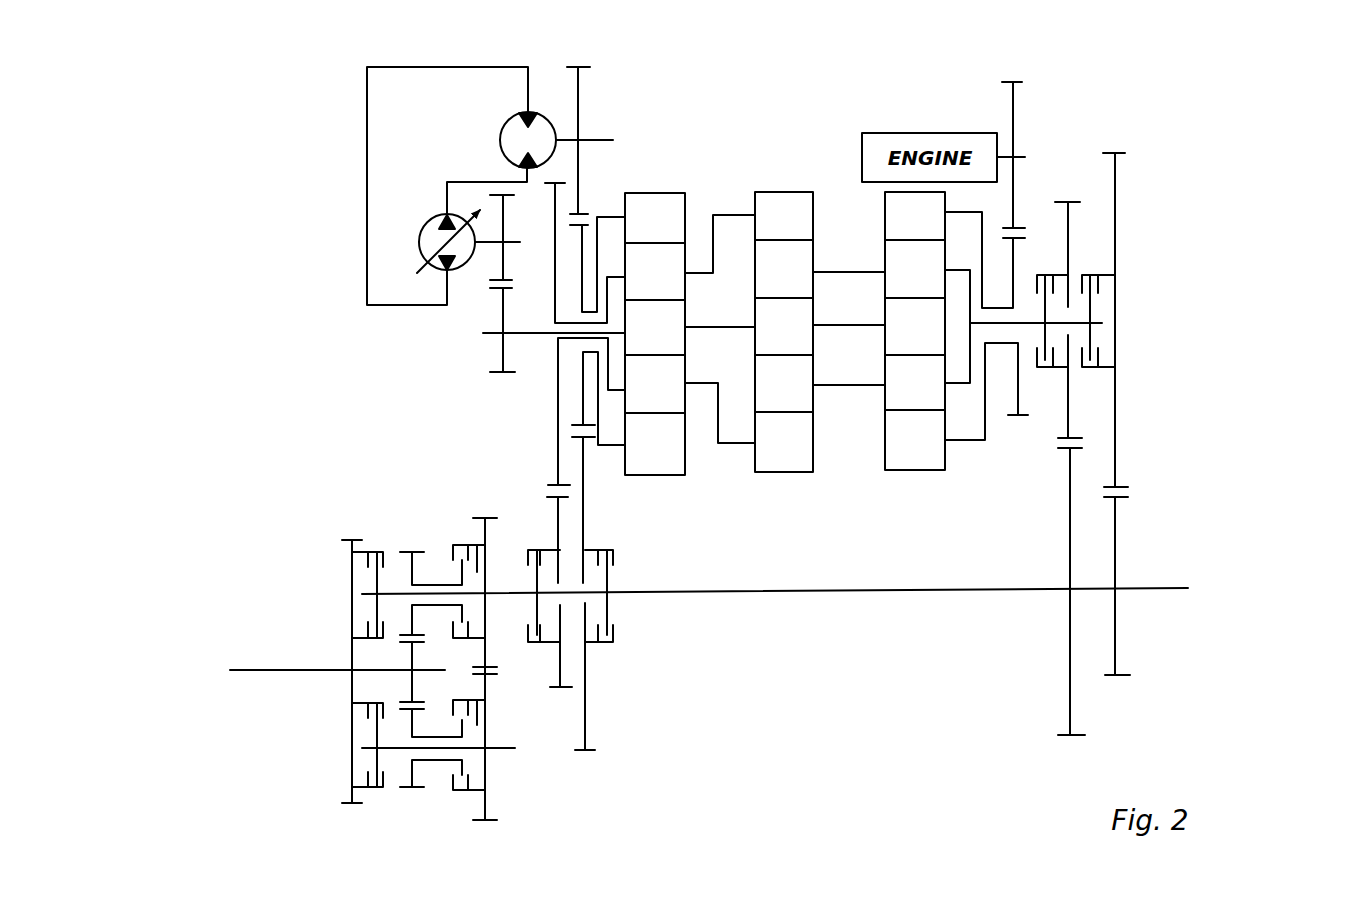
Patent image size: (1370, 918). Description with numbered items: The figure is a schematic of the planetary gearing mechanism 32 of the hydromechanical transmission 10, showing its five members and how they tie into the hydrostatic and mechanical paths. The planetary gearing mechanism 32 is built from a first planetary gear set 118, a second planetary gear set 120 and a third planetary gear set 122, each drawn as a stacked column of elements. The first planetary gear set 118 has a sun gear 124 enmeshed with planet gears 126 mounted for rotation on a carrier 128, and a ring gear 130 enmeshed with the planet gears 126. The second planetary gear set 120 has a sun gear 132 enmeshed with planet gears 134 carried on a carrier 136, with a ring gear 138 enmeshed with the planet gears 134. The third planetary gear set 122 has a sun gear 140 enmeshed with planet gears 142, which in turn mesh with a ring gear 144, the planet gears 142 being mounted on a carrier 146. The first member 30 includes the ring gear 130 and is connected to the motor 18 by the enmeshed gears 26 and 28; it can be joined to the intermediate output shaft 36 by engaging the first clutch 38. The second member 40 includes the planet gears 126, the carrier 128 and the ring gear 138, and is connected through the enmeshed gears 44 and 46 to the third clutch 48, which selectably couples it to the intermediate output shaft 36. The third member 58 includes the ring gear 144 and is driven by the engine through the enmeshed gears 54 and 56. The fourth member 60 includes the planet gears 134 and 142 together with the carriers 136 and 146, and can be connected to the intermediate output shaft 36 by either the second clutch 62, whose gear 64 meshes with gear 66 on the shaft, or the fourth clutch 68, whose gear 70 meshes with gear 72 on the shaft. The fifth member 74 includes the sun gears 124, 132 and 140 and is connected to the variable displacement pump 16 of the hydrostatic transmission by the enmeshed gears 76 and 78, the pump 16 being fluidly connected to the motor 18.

The transmission 10 is at (1288, 722).
The variable displacement pump 16 is at (432, 250).
The motor 18 is at (500, 127).
The gear 26 is at (588, 66).
The gear 28 is at (572, 233).
The first member 30 is at (603, 212).
The planetary gearing mechanism 32 is at (790, 497).
The intermediate output shaft 36 is at (794, 596).
The first clutch 38 is at (613, 643).
The second member 40 is at (617, 393).
The gear 44 is at (550, 482).
The gear 46 is at (545, 497).
The third clutch 48 is at (535, 646).
The gear 54 is at (1016, 80).
The input gear 56 is at (1019, 418).
The third member 58 is at (967, 443).
The fourth member 60 is at (955, 268).
The second clutch 62 is at (1047, 372).
The gear 64 is at (1060, 442).
The gear 66 is at (1064, 738).
The fourth clutch 68 is at (1096, 372).
The gear 70 is at (1126, 151).
The gear 72 is at (1130, 677).
The fifth member 74 is at (483, 340).
The gear 76 is at (498, 375).
The gear 78 is at (492, 289).
The first planetary gear set 118 is at (687, 478).
The second planetary gear set 120 is at (817, 476).
The third planetary gear set 122 is at (950, 474).
The sun gear 124 is at (687, 346).
The planet gears 126 is at (687, 256).
The carrier 128 is at (707, 275).
The ring gear 130 is at (648, 192).
The sun gear 132 is at (814, 313).
The planet gears 134 is at (814, 253).
The carrier 136 is at (850, 387).
The ring gear 138 is at (776, 191).
The sun gear 140 is at (885, 345).
The planet gears 142 is at (884, 251).
The ring gear 144 is at (912, 475).
The carrier 146 is at (958, 386).